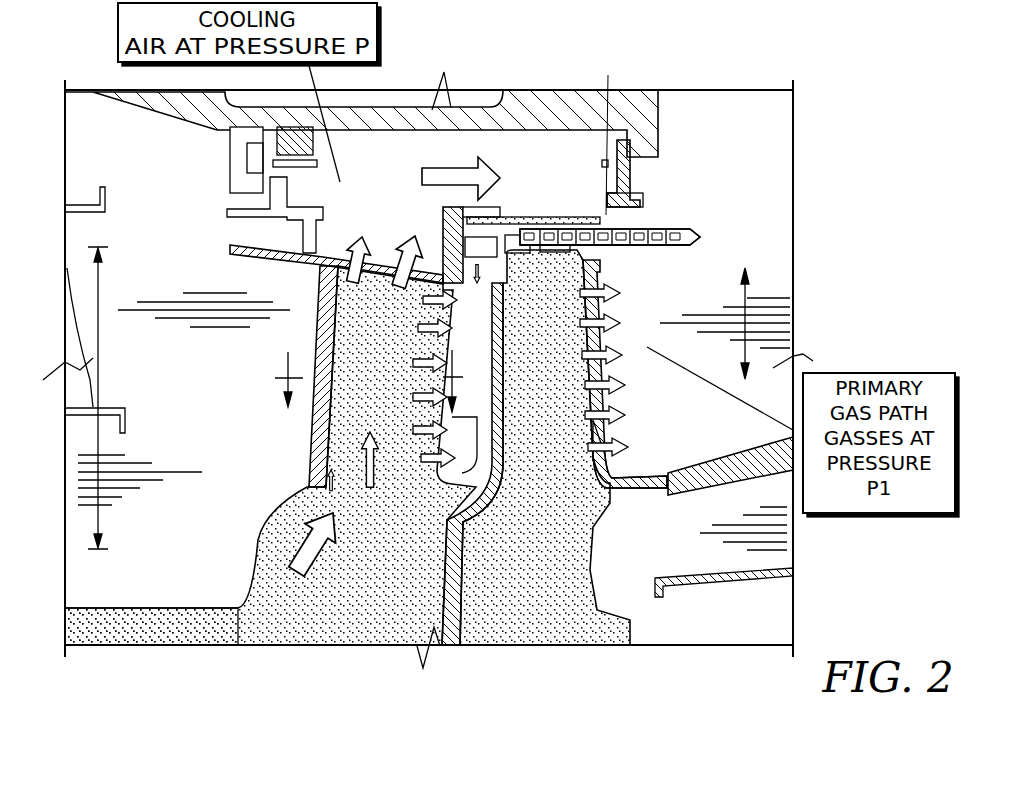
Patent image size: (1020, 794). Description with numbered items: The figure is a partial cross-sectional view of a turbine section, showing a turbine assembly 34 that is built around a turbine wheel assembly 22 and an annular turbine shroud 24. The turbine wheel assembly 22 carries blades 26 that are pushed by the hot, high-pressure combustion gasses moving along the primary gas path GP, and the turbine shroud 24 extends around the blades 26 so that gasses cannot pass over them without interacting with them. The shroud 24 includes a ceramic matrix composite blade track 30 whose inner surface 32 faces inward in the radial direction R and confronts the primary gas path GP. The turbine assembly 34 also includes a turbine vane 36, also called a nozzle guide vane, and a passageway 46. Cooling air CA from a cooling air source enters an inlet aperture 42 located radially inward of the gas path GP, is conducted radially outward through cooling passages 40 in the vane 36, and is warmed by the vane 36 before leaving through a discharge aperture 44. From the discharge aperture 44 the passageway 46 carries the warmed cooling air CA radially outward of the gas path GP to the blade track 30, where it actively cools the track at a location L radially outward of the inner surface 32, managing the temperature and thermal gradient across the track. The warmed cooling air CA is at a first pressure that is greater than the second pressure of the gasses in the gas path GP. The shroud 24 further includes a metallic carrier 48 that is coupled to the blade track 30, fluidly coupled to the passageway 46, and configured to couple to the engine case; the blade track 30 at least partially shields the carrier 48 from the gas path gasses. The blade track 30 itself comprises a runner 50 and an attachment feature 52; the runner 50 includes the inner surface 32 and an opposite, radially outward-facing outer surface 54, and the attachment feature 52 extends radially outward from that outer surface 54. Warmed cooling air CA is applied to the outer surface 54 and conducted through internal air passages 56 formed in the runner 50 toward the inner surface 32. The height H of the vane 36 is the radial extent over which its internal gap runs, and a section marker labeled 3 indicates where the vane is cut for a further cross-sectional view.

The turbine wheel assembly 22 is at (603, 280).
The annular turbine shroud 24 is at (617, 140).
The blades 26 is at (583, 430).
The ceramic matrix composite blade track 30 is at (702, 234).
The inner surface 32 is at (660, 252).
The turbine assembly 34 is at (404, 53).
The turbine vane 36 is at (323, 460).
The cooling passages 40 is at (337, 318).
The inlet aperture 42 is at (273, 622).
The discharge aperture 44 is at (317, 267).
The passageway 46 is at (383, 168).
The metallic carrier 48 is at (490, 200).
The runner 50 is at (612, 245).
The attachment feature 52 is at (510, 230).
The outer surface 54 is at (619, 192).
The internal air passages 56 is at (524, 247).
The height of the turbine vane H is at (98, 360).
The radial direction R is at (753, 293).
The location L is at (609, 134).
The cooling air CA is at (460, 158).
The primary gas path GP is at (665, 397).
The section line FIG. 3 is at (376, 411).